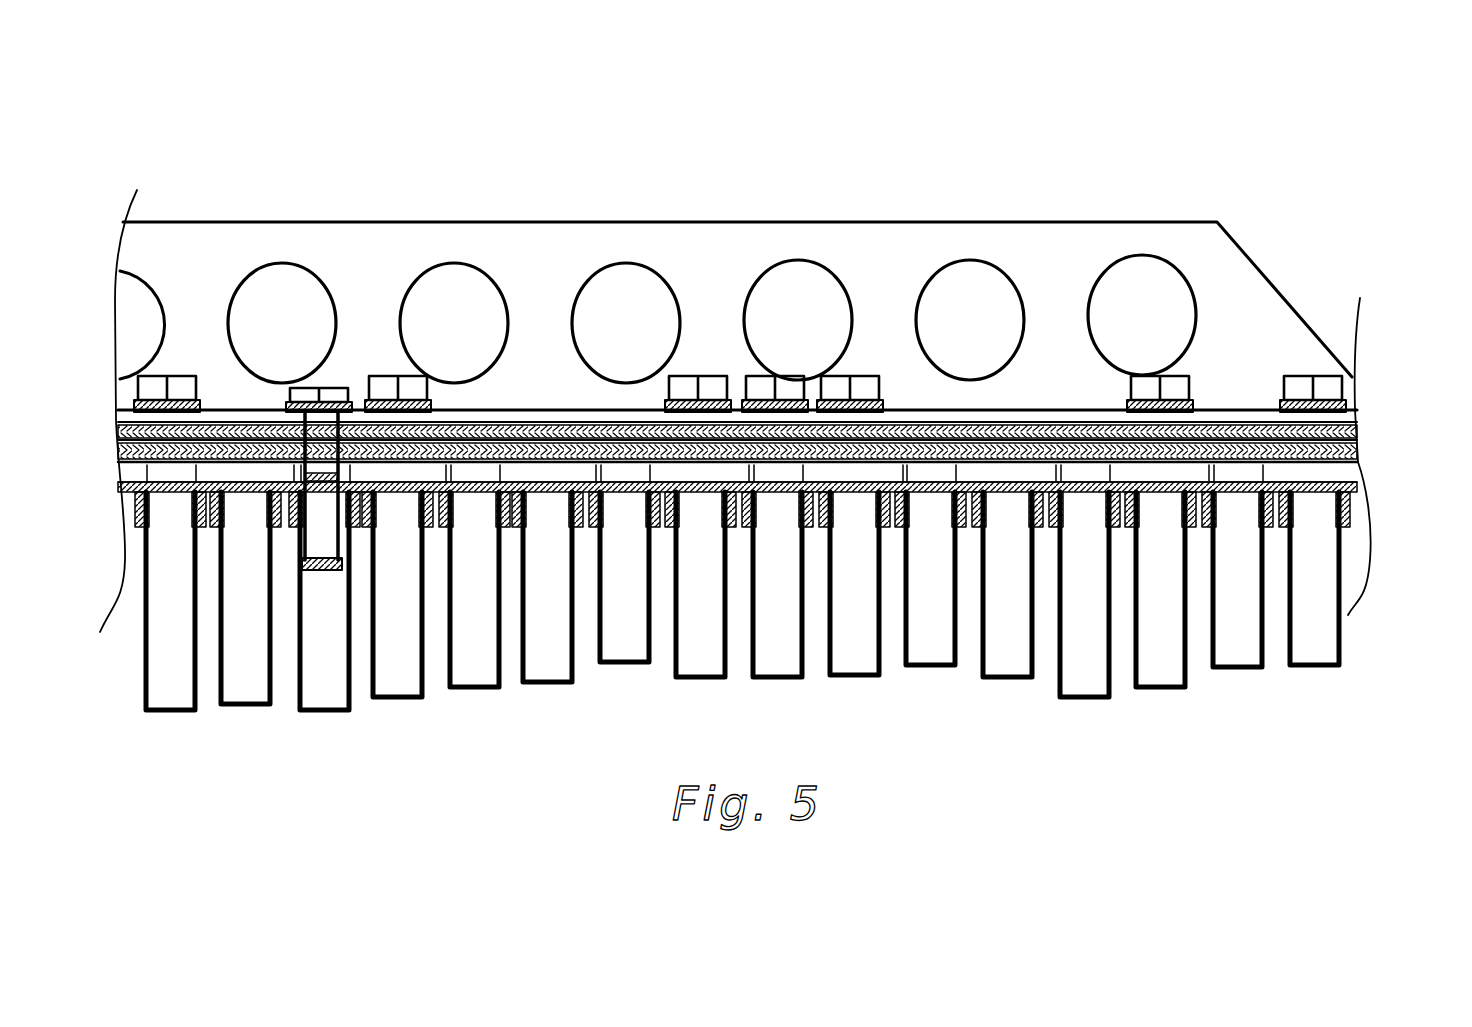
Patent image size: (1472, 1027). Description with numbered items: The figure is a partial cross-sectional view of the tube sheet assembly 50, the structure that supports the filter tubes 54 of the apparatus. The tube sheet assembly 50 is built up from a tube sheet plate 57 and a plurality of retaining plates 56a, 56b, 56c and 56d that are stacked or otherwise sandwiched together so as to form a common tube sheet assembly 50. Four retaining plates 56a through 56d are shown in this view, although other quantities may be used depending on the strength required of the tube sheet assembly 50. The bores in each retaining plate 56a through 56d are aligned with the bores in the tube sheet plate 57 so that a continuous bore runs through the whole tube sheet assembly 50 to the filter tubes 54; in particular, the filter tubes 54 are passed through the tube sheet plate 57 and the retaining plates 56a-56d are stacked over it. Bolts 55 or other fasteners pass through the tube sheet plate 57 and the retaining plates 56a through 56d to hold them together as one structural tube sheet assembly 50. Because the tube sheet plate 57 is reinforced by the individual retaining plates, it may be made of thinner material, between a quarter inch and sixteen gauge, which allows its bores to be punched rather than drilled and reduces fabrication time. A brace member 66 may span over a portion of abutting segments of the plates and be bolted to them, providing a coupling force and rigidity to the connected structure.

The tube sheet assembly 50 is at (998, 118).
The filter tubes 54 is at (1000, 678).
The bolts 55 is at (393, 375).
The retaining plate 56a is at (1357, 407).
The retaining plate 56b is at (1358, 428).
The retaining plate 56c is at (1362, 441).
The retaining plate 56d is at (1363, 470).
The tube sheet plate 57 is at (1372, 535).
The brace member 66 is at (870, 222).